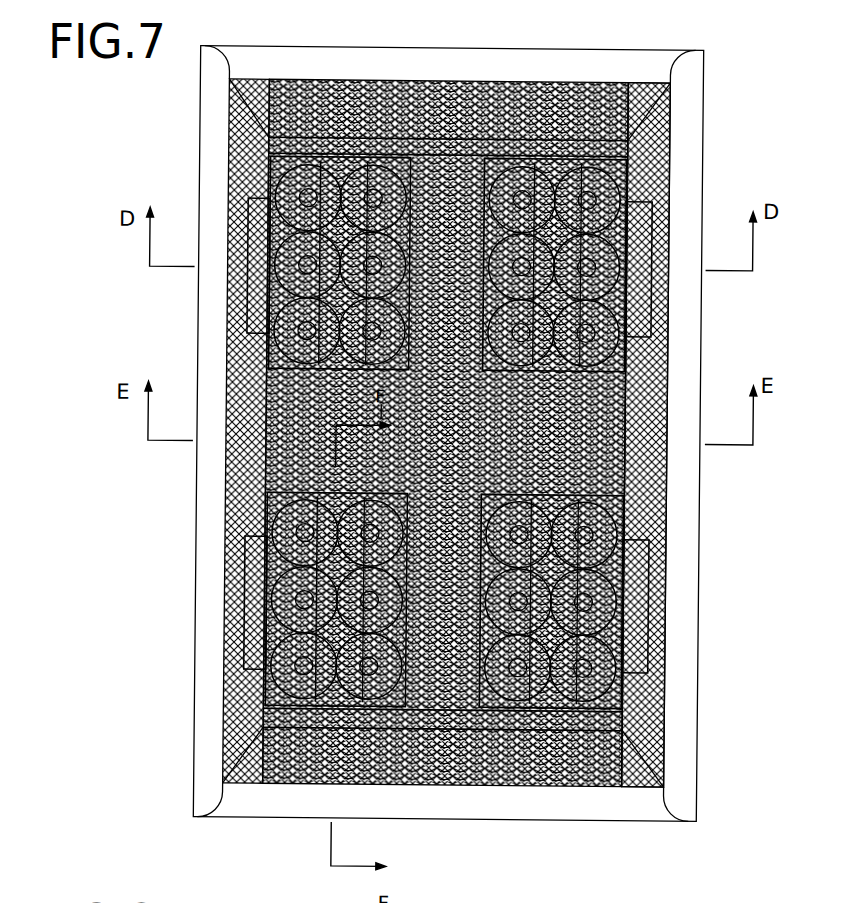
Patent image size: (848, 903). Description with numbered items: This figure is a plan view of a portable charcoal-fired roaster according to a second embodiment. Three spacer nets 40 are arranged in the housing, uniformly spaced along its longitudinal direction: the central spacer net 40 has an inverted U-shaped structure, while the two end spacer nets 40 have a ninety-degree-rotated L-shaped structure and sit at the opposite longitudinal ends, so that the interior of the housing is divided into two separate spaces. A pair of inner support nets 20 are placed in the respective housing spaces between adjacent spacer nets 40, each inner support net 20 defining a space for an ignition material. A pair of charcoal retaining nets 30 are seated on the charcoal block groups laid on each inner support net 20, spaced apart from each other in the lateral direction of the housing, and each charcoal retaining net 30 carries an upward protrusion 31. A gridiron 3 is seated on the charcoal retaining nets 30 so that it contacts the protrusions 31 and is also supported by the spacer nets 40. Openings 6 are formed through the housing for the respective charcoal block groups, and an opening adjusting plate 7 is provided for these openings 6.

The gridiron 3 is at (645, 118).
The inner support net 20 is at (657, 158).
The upward protrusion 31 is at (615, 268).
The charcoal retaining net 30 is at (619, 337).
The spacer net 40 is at (657, 390).
The opening 6 is at (652, 566).
The opening adjusting plate 7 is at (652, 630).